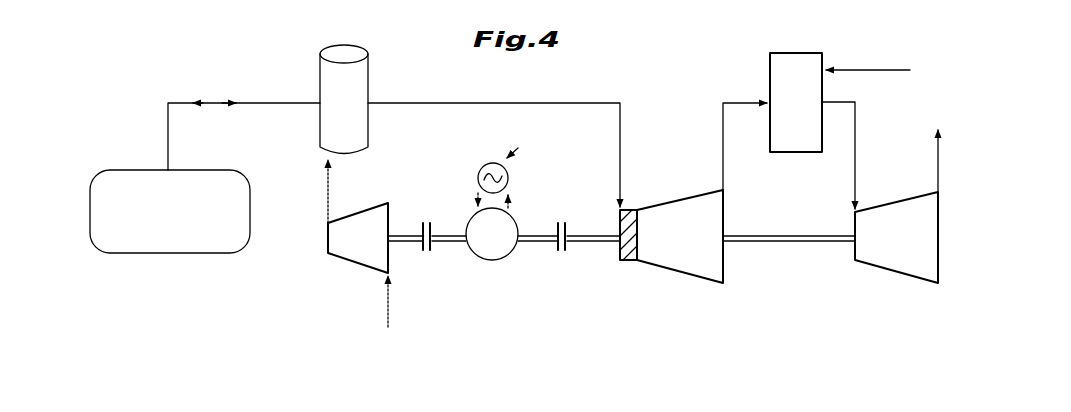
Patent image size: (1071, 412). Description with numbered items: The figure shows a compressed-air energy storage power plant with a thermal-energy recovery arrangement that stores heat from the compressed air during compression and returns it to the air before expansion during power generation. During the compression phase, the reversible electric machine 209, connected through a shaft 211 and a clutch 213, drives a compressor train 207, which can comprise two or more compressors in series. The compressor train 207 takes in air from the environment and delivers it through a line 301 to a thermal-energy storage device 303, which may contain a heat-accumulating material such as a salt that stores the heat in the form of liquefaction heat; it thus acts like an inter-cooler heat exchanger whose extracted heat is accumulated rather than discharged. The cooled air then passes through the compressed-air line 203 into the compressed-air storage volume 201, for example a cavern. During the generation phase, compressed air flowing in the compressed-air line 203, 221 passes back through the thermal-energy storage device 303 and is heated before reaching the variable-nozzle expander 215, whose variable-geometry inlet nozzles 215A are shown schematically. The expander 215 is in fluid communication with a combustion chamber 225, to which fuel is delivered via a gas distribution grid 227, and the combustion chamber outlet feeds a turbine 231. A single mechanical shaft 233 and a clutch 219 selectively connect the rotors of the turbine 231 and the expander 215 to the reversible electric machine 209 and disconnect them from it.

The compressed-air storage volume 201 is at (145, 242).
The compressed-air line 203 is at (258, 117).
The thermal-energy storage device 303 is at (368, 88).
The line 301 is at (329, 182).
The compressor train 207 is at (377, 250).
The shaft 211 is at (450, 232).
The clutch 213 is at (443, 210).
The reversible electric machine 209 is at (508, 247).
The clutch 219 is at (587, 207).
The mechanical shaft 233 is at (598, 236).
The compressed-air line 221 is at (551, 103).
The variable-geometry inlet nozzles 215A is at (629, 210).
The variable-nozzle expander 215 is at (683, 257).
The combustion chamber 225 is at (798, 63).
The gas distribution grid 227 is at (862, 68).
The turbine 231 is at (903, 253).